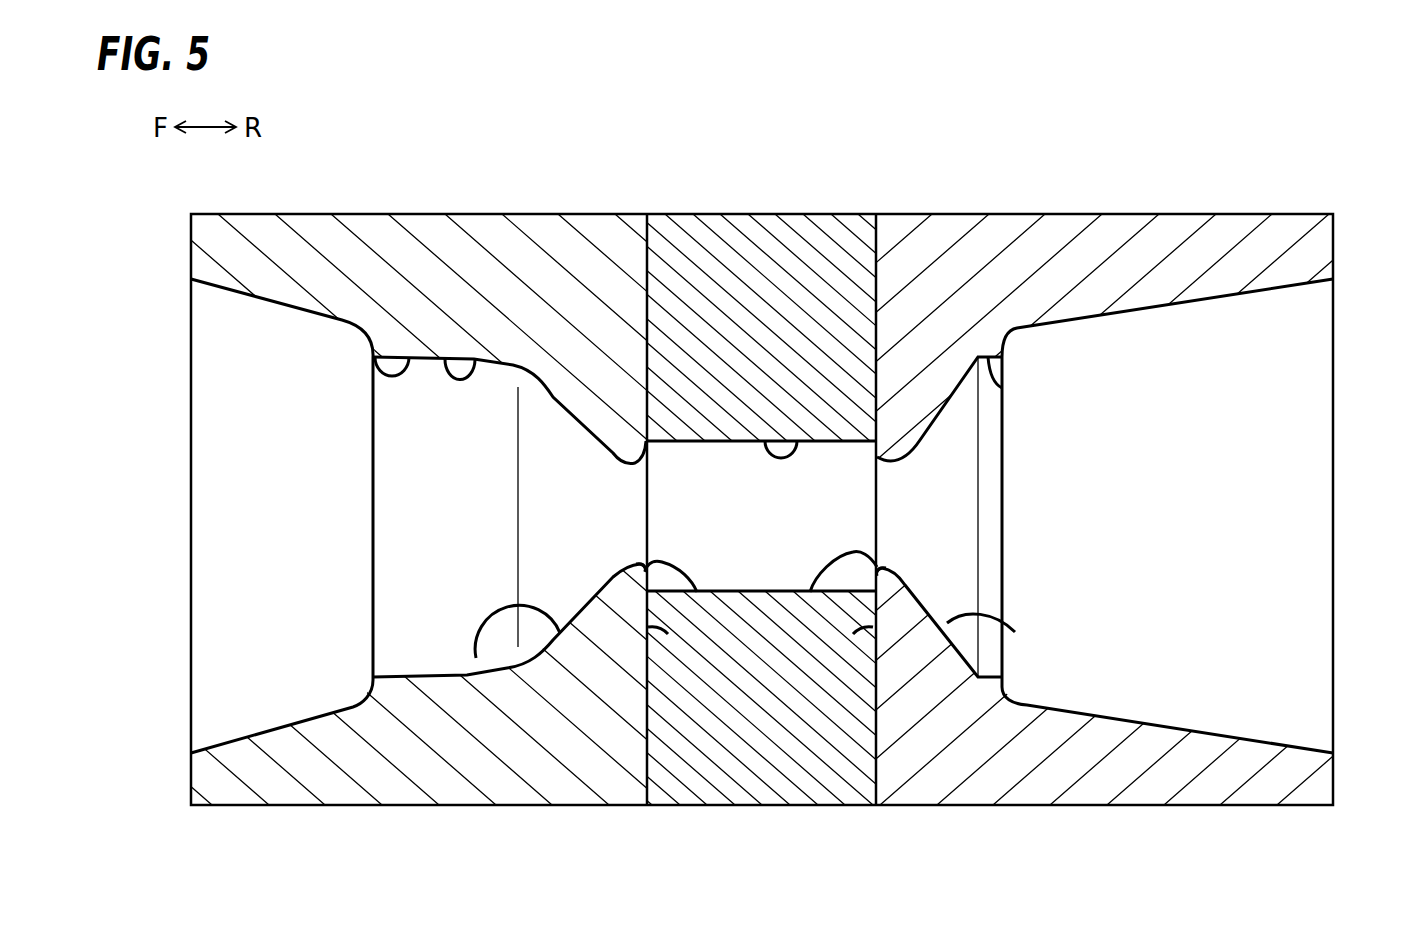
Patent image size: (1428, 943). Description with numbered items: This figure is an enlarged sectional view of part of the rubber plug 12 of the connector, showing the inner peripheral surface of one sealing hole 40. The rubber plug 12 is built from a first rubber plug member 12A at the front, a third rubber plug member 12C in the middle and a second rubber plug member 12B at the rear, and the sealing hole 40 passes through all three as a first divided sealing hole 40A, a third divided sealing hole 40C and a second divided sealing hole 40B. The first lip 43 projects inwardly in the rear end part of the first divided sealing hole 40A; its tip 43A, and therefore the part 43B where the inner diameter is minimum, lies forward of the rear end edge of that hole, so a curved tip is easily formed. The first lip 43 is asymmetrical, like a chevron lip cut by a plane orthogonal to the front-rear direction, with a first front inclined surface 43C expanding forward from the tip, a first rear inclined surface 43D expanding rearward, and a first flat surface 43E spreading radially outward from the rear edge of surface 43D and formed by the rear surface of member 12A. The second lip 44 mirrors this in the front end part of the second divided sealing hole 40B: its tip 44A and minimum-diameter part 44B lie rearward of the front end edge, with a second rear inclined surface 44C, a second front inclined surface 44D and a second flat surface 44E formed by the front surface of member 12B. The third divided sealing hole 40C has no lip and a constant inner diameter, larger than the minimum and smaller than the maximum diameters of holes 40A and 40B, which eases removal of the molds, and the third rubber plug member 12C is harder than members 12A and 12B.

The rubber plug 12 is at (960, 138).
The first rubber plug member 12A is at (603, 214).
The second rubber plug member 12B is at (957, 223).
The third rubber plug member 12C is at (765, 223).
The sealing hole 40 is at (376, 375).
The first divided sealing hole 40A is at (460, 380).
The second divided sealing hole 40B is at (1002, 388).
The third divided sealing hole 40C is at (773, 458).
The first lip 43 is at (625, 610).
The tip of the first lip 43A is at (640, 566).
The part where the inner diameter of the first divided sealing hole is minimum 43B is at (640, 564).
The first front inclined surface 43C is at (476, 658).
The first rear inclined surface 43D is at (697, 592).
The first flat surface 43E is at (668, 634).
The second lip 44 is at (900, 610).
The tip of the second lip 44A is at (882, 567).
The part where the inner diameter of the second divided sealing hole is minimum 44B is at (880, 566).
The second rear inclined surface 44C is at (1015, 632).
The second front inclined surface 44D is at (810, 592).
The second flat surface 44E is at (853, 634).